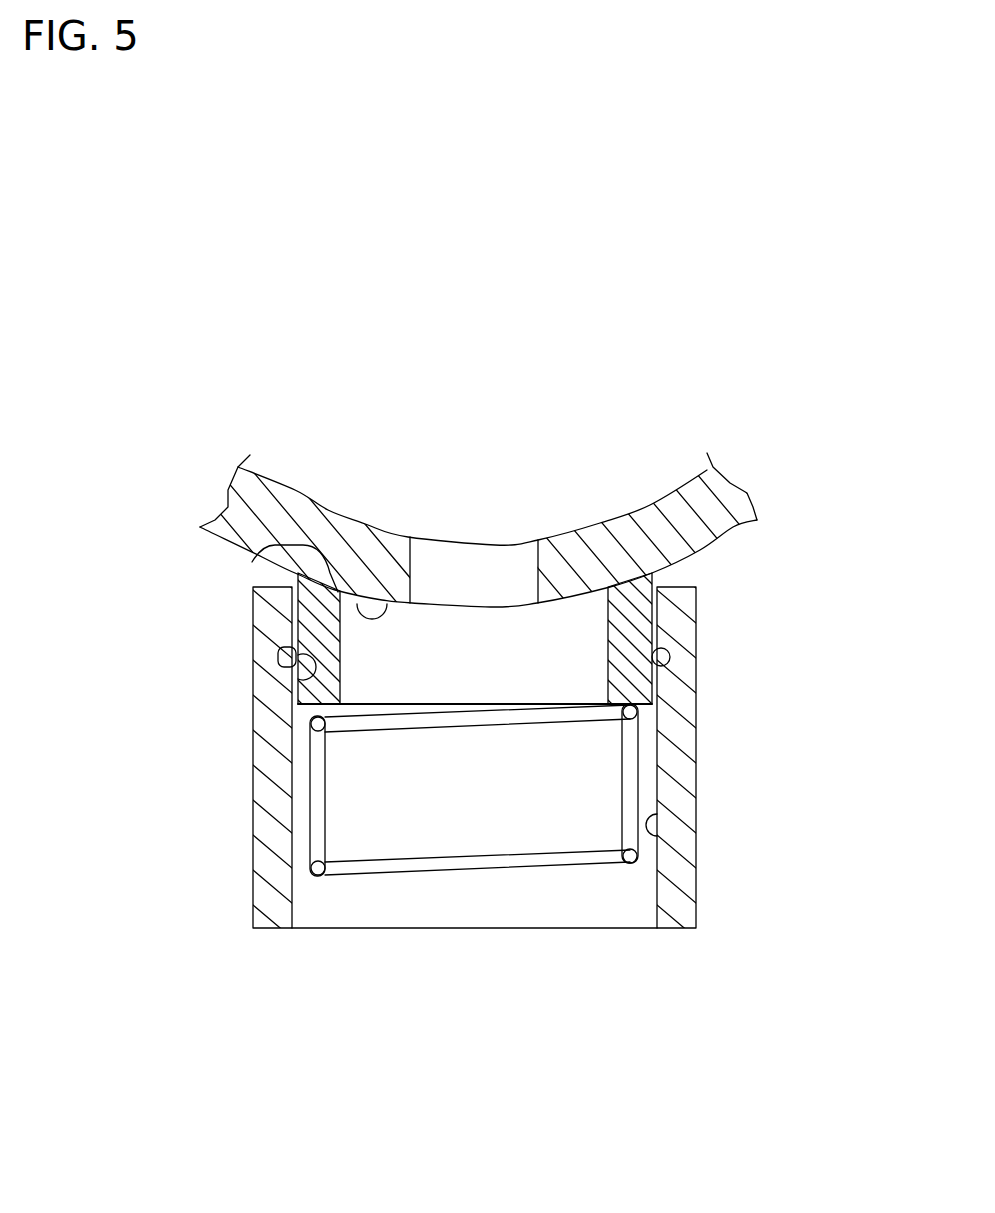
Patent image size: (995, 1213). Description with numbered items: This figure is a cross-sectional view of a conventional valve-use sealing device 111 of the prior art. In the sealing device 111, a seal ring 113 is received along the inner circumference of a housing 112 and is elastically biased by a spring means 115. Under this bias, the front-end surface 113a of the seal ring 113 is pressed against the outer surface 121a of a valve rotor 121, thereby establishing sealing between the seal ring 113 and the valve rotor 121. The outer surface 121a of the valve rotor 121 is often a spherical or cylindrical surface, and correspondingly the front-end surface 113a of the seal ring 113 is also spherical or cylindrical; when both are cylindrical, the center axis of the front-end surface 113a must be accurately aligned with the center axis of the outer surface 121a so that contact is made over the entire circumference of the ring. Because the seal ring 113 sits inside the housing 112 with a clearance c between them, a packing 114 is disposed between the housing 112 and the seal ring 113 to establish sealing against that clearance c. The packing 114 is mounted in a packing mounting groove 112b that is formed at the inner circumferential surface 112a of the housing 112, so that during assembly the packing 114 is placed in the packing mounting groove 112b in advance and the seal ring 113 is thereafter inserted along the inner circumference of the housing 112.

The sealing device 111 is at (322, 955).
The housing 112 is at (683, 780).
The inner circumferential surface 112a is at (660, 834).
The packing mounting groove 112b is at (293, 690).
The seal ring 113 is at (627, 617).
The front-end surface 113a is at (252, 562).
The packing 114 is at (670, 657).
The spring means 115 is at (515, 866).
The valve rotor 121 is at (237, 503).
The outer surface 121a is at (383, 597).
The clearance c is at (292, 622).